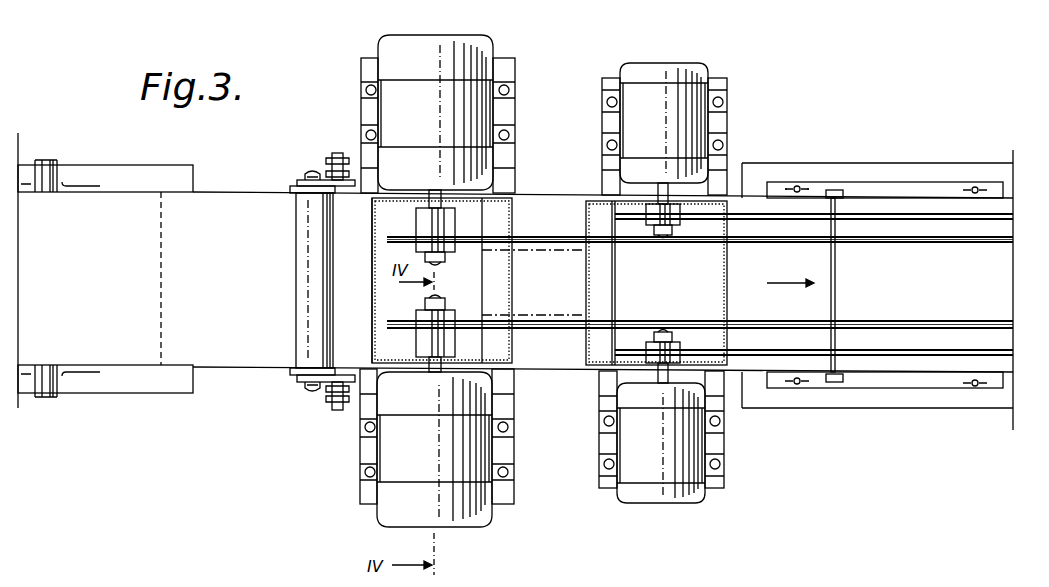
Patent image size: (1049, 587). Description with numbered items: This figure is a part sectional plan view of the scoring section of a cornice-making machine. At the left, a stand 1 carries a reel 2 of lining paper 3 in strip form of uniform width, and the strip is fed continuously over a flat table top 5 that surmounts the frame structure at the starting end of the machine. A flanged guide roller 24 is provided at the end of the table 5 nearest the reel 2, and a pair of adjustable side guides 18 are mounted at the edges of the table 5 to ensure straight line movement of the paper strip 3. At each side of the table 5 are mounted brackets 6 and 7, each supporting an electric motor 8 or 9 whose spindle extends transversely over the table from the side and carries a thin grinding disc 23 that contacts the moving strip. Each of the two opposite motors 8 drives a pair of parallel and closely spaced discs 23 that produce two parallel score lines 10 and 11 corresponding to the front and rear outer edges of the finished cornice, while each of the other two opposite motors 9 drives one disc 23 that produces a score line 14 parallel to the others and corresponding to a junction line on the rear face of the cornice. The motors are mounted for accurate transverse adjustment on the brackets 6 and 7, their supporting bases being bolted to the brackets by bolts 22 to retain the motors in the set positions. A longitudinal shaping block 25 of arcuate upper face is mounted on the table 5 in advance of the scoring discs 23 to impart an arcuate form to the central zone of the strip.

The stand 1 is at (113, 174).
The reel 2 is at (119, 353).
The lining paper 3 is at (226, 196).
The flat table top 5 is at (548, 197).
The bracket 6 is at (510, 78).
The bracket 7 is at (727, 85).
The electric motor 8 is at (436, 42).
The electric motor 9 is at (660, 70).
The score line 10 is at (545, 249).
The score line 11 is at (564, 237).
The score line 14 is at (768, 218).
The adjustable side guide 18 is at (852, 195).
The bolt 22 is at (366, 135).
The grinding disc 23 is at (418, 241).
The flanged guide roller 24 is at (300, 266).
The shaping block 25 is at (373, 273).